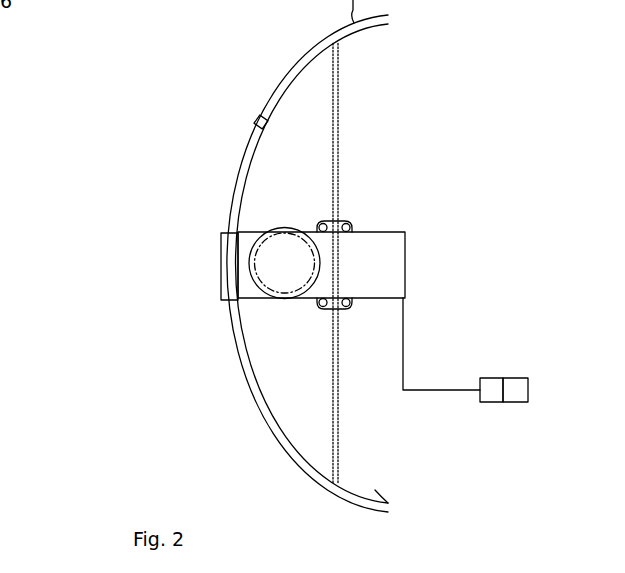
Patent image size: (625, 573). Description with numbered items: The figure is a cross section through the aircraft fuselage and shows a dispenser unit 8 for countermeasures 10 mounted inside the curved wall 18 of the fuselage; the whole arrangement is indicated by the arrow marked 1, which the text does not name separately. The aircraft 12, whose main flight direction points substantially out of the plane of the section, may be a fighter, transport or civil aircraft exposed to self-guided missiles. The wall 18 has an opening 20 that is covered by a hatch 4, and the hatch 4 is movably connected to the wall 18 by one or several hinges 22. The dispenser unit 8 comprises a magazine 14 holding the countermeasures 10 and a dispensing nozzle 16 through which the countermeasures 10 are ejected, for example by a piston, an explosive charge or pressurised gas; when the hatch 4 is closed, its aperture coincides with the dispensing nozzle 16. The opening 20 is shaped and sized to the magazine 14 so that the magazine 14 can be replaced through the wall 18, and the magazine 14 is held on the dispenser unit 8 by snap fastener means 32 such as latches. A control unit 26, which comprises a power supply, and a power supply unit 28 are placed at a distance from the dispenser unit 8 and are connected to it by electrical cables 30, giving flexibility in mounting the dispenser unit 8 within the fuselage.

The lighting device 1 is at (421, 106).
The hatch 4 is at (238, 164).
The dispenser unit 8 is at (397, 231).
The countermeasures 10 is at (285, 228).
The aircraft 12 is at (149, 319).
The magazine 14 is at (260, 298).
The dispensing nozzle 16 is at (220, 242).
The wall 18 is at (297, 72).
The opening 20 is at (250, 391).
The hinges 22 is at (260, 117).
The control unit 26 is at (492, 378).
The power supply unit 28 is at (525, 378).
The electrical cables 30 is at (403, 350).
The snap fastener means 32 is at (343, 218).